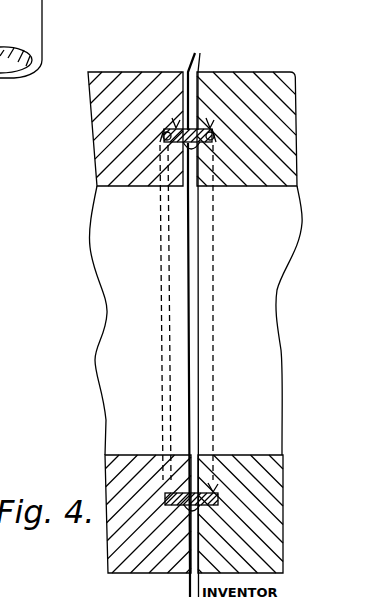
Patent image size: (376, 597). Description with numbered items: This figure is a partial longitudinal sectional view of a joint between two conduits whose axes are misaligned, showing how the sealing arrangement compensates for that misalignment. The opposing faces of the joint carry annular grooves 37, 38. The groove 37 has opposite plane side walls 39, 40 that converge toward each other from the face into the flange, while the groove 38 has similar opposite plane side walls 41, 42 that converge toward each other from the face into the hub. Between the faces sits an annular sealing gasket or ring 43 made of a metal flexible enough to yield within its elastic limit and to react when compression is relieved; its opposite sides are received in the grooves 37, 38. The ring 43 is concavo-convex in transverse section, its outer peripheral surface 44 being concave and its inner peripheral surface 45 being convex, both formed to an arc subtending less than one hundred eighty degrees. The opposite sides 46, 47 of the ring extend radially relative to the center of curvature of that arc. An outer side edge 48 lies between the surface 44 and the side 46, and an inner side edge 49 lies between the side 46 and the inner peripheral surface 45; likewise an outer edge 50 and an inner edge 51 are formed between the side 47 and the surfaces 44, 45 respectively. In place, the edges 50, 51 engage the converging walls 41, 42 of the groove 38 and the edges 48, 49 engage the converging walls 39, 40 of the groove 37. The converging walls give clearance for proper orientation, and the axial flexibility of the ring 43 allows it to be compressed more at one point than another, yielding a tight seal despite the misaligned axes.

The annular groove 37 is at (213, 125).
The annular groove 38 is at (176, 122).
The plane side wall 39 is at (210, 122).
The plane side wall 40 is at (213, 490).
The plane side wall 41 is at (176, 130).
The plane side wall 42 is at (160, 160).
The annular sealing gasket or ring 43 is at (218, 497).
The outer peripheral surface 44 is at (199, 316).
The inner peripheral surface 45 is at (226, 148).
The side of the ring 46 is at (222, 138).
The side of the ring 47 is at (163, 138).
The outer side edge 48 is at (213, 132).
The inner side edge 49 is at (218, 503).
The outer edge 50 is at (164, 135).
The inner edge 51 is at (163, 142).